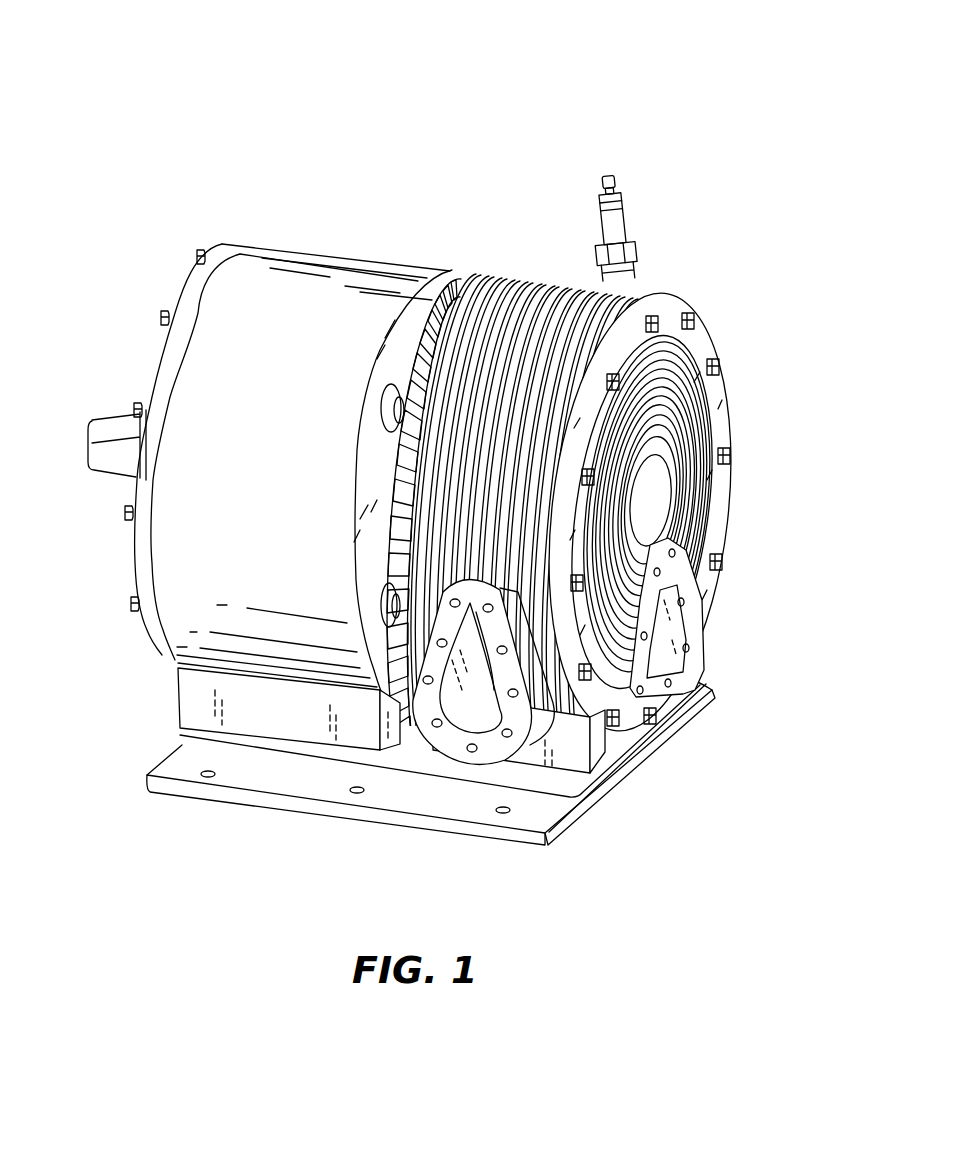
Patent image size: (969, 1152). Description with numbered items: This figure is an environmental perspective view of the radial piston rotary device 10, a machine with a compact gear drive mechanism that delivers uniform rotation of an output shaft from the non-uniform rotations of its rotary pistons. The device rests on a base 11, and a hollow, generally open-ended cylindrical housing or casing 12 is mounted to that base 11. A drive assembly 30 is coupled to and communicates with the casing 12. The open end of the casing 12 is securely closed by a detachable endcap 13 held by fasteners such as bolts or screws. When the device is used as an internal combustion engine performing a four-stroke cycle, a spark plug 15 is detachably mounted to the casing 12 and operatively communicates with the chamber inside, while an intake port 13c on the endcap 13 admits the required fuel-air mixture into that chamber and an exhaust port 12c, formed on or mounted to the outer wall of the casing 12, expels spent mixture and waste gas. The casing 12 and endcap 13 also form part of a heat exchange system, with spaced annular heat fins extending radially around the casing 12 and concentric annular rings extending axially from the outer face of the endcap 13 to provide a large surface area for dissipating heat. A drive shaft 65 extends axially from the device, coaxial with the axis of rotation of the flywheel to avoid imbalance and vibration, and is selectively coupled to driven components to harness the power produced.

The radial piston rotary device 10 is at (322, 100).
The base 11 is at (586, 808).
The casing 12 is at (690, 270).
The exhaust port 12c is at (470, 710).
The endcap 13 is at (531, 250).
The intake port 13c is at (710, 633).
The spark plug 15 is at (616, 178).
The drive assembly 30 is at (140, 690).
The drive shaft 65 is at (106, 415).